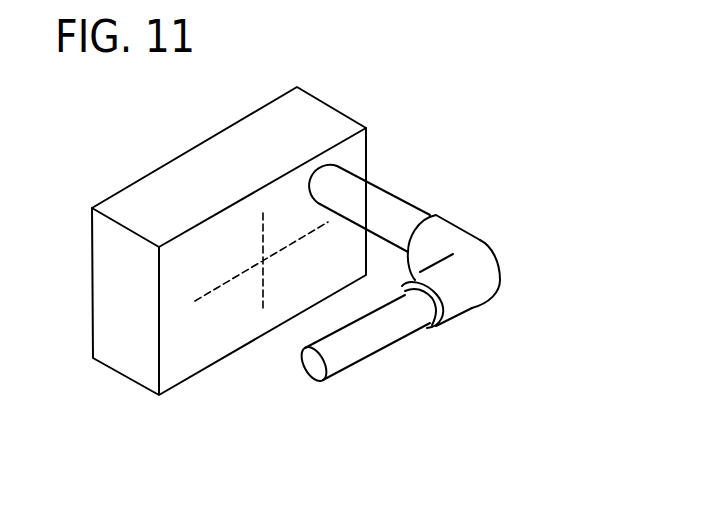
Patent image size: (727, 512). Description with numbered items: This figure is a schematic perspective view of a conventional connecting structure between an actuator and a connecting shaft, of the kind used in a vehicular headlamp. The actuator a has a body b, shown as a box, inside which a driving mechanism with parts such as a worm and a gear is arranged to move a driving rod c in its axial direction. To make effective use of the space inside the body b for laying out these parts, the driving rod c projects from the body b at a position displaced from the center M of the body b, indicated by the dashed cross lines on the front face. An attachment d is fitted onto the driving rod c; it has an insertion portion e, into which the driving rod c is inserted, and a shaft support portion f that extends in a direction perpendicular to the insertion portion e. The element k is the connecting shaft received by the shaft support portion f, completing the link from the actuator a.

The actuator a is at (316, 106).
The body b is at (338, 122).
The driving rod c is at (403, 215).
The attachment d is at (487, 262).
The insertion portion e is at (443, 232).
The shaft support portion f is at (458, 301).
The pipe k is at (355, 348).
The center of the body M is at (263, 262).